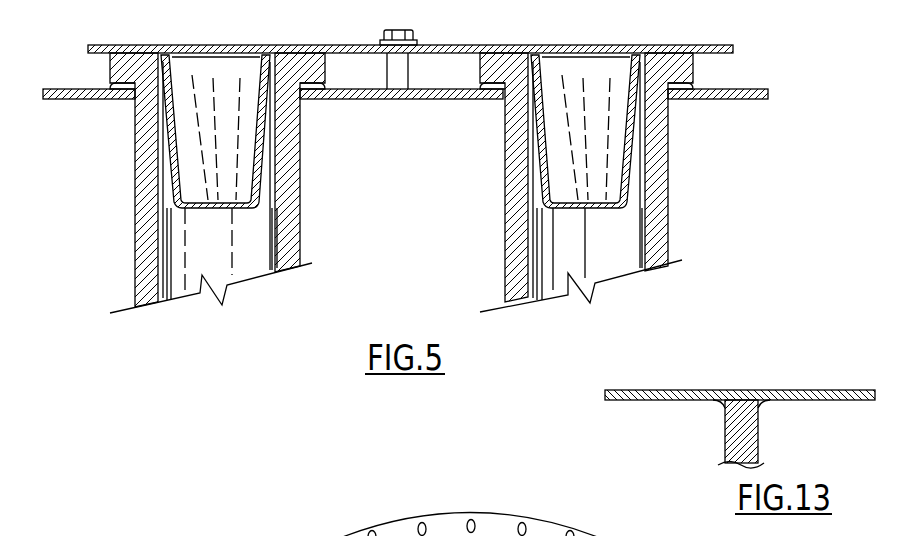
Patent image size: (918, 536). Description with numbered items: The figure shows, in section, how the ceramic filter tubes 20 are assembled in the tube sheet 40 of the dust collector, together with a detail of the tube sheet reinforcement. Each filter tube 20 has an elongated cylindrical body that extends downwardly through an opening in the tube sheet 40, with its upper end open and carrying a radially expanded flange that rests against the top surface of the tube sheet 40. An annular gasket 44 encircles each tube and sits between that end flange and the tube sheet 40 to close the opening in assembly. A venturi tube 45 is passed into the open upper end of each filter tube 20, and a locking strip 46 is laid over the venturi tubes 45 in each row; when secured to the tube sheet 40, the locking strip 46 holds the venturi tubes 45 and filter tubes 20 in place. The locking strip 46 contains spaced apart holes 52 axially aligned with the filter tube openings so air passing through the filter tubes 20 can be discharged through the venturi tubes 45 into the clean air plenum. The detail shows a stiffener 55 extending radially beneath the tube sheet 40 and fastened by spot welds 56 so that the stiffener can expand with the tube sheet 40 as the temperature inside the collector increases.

In FIG. 5, the filter tube 20 is at (136, 262).
In FIG. 5, the tube sheet 40 is at (761, 91).
In FIG. 13, the tube sheet 40 is at (798, 390).
In FIG. 5, the annular gasket 44 is at (122, 89).
In FIG. 5, the venturi tube 45 is at (143, 52).
In FIG. 5, the locking strip 46 is at (447, 45).
In FIG. 5, the spaced apart holes 52 is at (583, 45).
In FIG. 13, the stiffeners 55 is at (725, 432).
In FIG. 13, the spot welds 56 is at (769, 405).